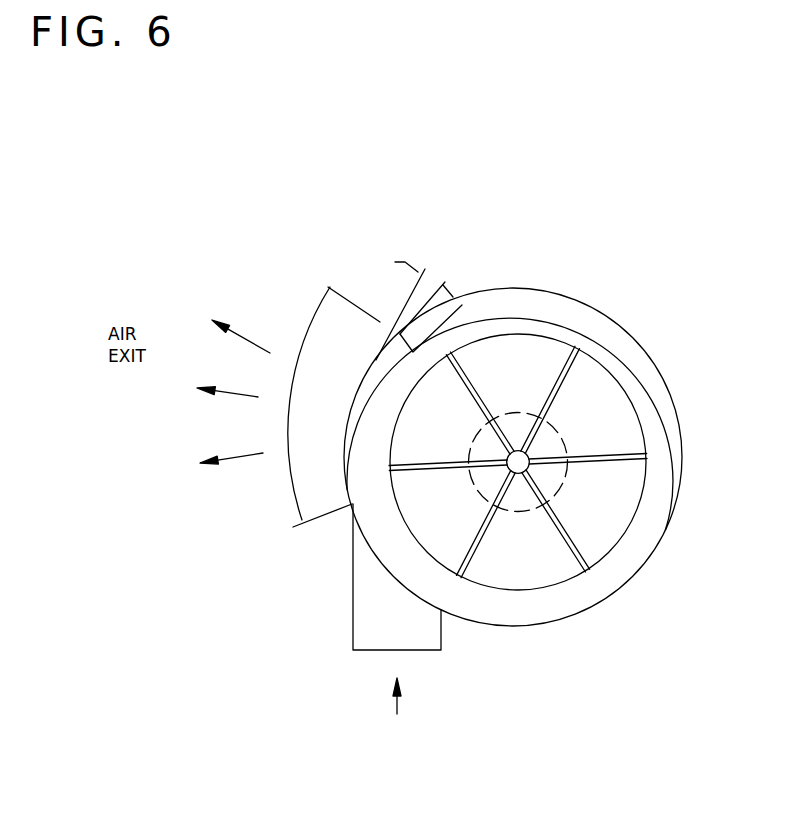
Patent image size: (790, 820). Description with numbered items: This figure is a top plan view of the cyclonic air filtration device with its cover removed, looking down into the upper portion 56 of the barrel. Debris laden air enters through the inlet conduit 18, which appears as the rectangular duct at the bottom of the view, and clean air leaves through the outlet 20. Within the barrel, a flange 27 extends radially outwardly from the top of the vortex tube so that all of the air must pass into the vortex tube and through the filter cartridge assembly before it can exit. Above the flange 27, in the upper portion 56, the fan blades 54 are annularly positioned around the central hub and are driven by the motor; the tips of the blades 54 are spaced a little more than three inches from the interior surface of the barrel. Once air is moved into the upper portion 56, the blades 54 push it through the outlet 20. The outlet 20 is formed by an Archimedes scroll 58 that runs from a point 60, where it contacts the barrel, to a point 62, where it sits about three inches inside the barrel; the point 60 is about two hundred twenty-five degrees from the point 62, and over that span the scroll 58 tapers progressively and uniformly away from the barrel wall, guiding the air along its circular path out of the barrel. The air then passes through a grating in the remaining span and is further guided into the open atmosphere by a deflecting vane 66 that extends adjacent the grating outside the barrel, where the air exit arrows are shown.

The inlet conduit 18 is at (366, 608).
The outlet 20 is at (312, 470).
The flange 27 is at (483, 606).
The fan blades 54 is at (433, 468).
The upper portion 56 is at (540, 607).
The Archimedes scroll 58 is at (525, 304).
The point 60 is at (632, 573).
The point 62 is at (400, 334).
The deflecting vane 66 is at (360, 362).